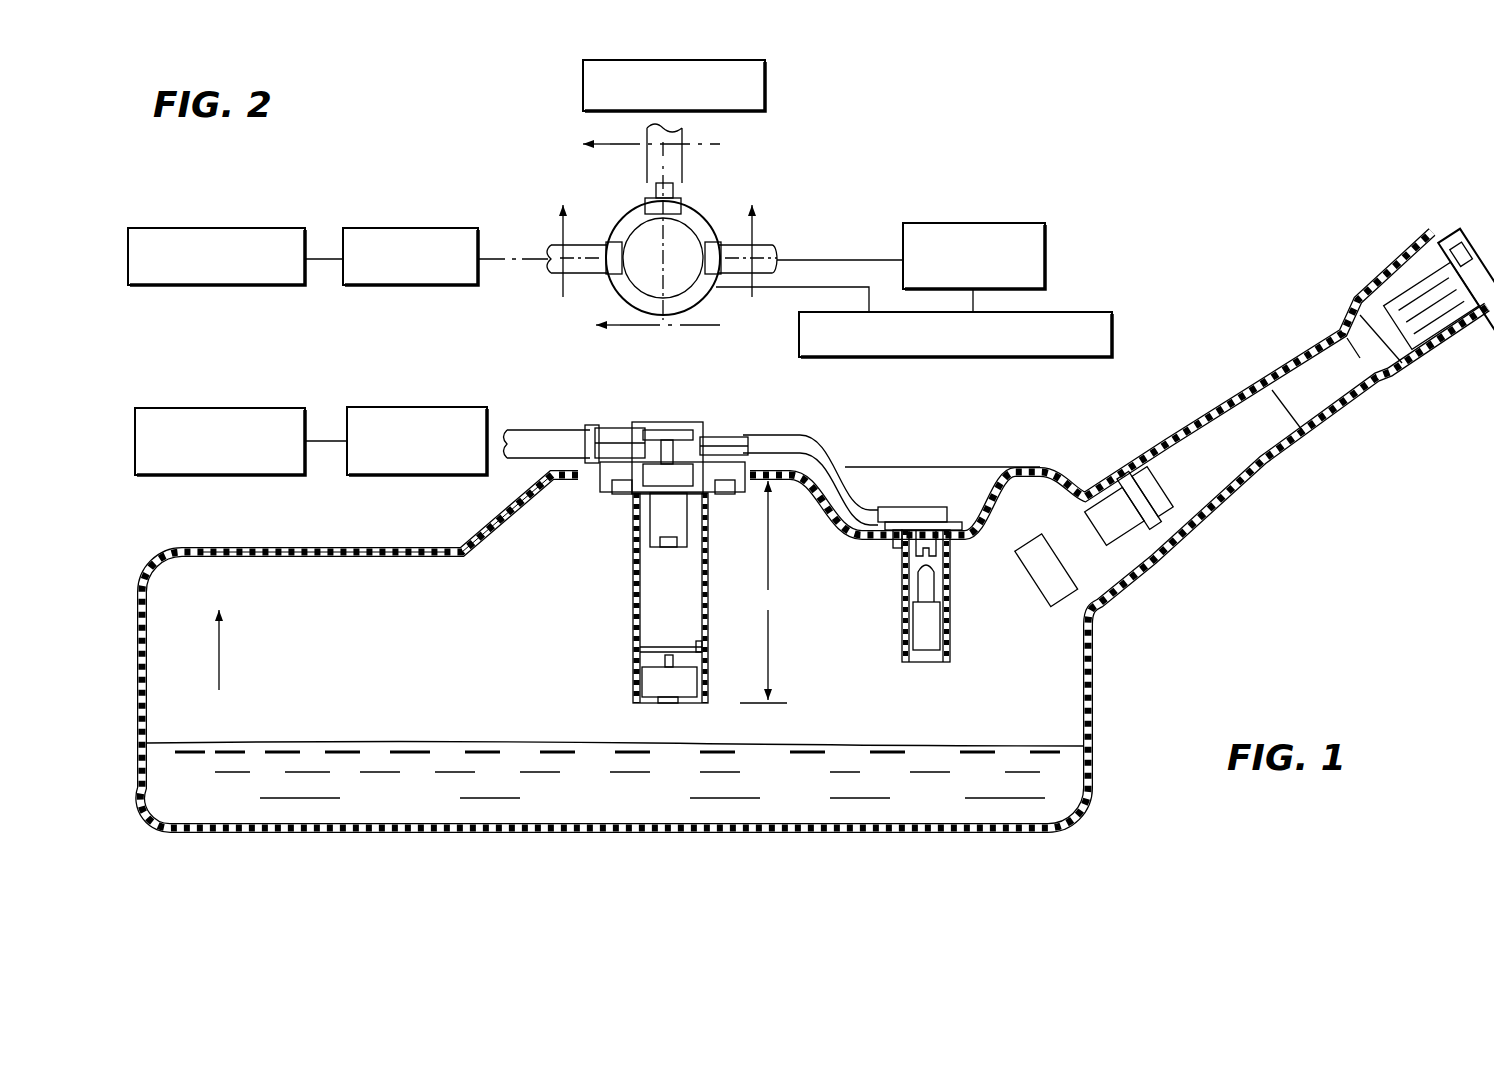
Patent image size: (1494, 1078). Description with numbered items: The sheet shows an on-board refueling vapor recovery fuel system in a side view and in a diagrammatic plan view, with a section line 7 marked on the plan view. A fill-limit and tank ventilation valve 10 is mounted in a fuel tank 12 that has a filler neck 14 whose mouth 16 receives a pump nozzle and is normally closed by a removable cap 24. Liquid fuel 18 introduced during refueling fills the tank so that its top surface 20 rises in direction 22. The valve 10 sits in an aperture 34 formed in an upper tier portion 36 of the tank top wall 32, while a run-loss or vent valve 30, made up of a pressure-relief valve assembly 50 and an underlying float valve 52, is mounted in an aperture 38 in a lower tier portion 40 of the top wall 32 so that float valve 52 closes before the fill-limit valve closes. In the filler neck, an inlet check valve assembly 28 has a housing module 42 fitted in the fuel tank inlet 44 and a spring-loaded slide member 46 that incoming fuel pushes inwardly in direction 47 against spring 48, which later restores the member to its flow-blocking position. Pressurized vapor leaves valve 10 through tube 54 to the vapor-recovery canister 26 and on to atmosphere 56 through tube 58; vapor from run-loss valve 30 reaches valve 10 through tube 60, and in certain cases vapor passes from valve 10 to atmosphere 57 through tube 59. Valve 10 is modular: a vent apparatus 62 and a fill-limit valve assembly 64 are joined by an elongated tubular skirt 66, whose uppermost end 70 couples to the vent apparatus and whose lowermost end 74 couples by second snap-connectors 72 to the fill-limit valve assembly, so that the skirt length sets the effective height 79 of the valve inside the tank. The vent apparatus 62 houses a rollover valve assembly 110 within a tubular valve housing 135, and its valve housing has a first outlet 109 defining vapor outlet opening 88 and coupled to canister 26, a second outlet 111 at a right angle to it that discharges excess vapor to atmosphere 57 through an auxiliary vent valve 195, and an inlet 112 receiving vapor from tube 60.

In FIG. 2, the section line 7- 7 is at (652, 264).
In FIG. 2, the fill-limit and tank ventilation valve 10 is at (695, 217).
In FIG. 1, the fill-limit and tank ventilation valve 10 is at (666, 541).
In FIG. 2, the fuel tank 12 is at (1072, 312).
In FIG. 1, the fuel tank 12 is at (1099, 722).
In FIG. 2, the filler neck 14 is at (618, 239).
In FIG. 1, the filler neck 14 is at (1231, 429).
In FIG. 1, the mouth 16 is at (1418, 355).
In FIG. 1, the liquid fuel 18 is at (912, 785).
In FIG. 1, the top surface 20 is at (355, 742).
In FIG. 1, the direction 22 is at (219, 660).
In FIG. 1, the removable cap 24 is at (1466, 230).
In FIG. 2, the vapor-recovery canister 26 is at (420, 228).
In FIG. 1, the vapor-recovery canister 26 is at (445, 407).
In FIG. 1, the inlet check valve assembly 28 is at (1127, 478).
In FIG. 2, the run-loss valve 30 is at (1045, 250).
In FIG. 1, the run-loss valve 30 is at (915, 541).
In FIG. 1, the top wall 32 is at (338, 544).
In FIG. 1, the aperture 34 is at (707, 497).
In FIG. 1, the upper tier portion 36 is at (548, 484).
In FIG. 1, the aperture 38 is at (896, 548).
In FIG. 1, the lower tier portion 40 is at (972, 524).
In FIG. 1, the housing module 42 is at (1043, 545).
In FIG. 1, the fuel tank inlet 44 is at (1172, 566).
In FIG. 1, the spring-loaded slide member 46 is at (1162, 574).
In FIG. 1, the direction 47 is at (1170, 490).
In FIG. 1, the spring 48 is at (1113, 602).
In FIG. 1, the pressure-relief valve assembly 50 is at (907, 506).
In FIG. 1, the float valve 52 is at (928, 592).
In FIG. 2, the tube 54 is at (498, 257).
In FIG. 1, the tube 54 is at (547, 428).
In FIG. 2, the atmosphere 56 is at (255, 228).
In FIG. 1, the atmosphere 56 is at (222, 408).
In FIG. 2, the atmosphere 57 is at (727, 62).
In FIG. 2, the tube 58 is at (326, 258).
In FIG. 1, the tube 58 is at (320, 441).
In FIG. 2, the tube 59 is at (680, 121).
In FIG. 2, the tube 60 is at (850, 258).
In FIG. 1, the tube 60 is at (822, 444).
In FIG. 2, the vent apparatus 62 is at (630, 220).
In FIG. 1, the vent apparatus 62 is at (674, 421).
In FIG. 1, the fill-limit valve assembly 64 is at (632, 687).
In FIG. 1, the elongated tubular skirt 66 is at (633, 597).
In FIG. 1, the uppermost end 70 is at (633, 490).
In FIG. 1, the second snap-connectors 72 is at (648, 635).
In FIG. 1, the lowermost end 74 is at (705, 648).
In FIG. 1, the effective height 79 is at (763, 592).
In FIG. 1, the vapor outlet opening 88 is at (612, 432).
In FIG. 2, the first outlet 109 is at (583, 275).
In FIG. 1, the first outlet 109 is at (622, 436).
In FIG. 1, the rollover valve assembly 110 is at (693, 549).
In FIG. 2, the second outlet 111 is at (648, 168).
In FIG. 2, the inlet 112 is at (768, 250).
In FIG. 1, the inlet 112 is at (720, 440).
In FIG. 1, the tubular valve housing 135 is at (646, 535).
In FIG. 2, the auxiliary vent valve 195 is at (685, 210).